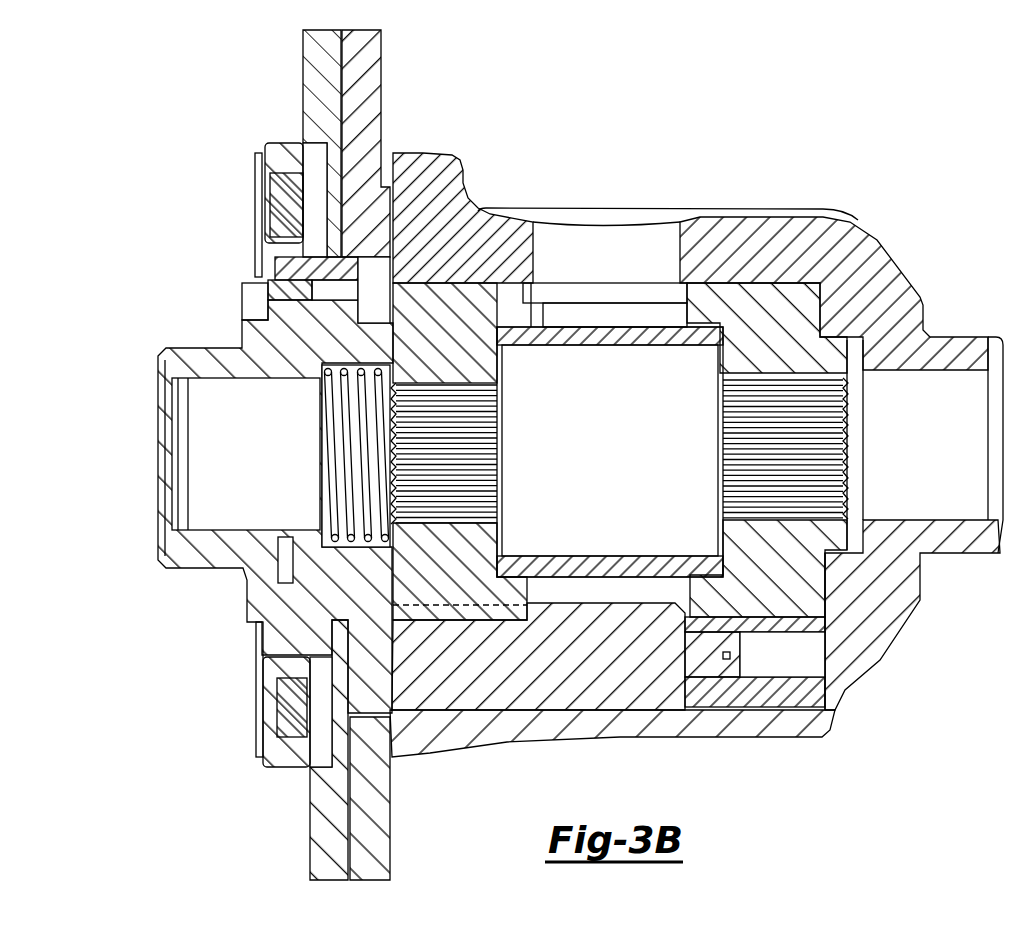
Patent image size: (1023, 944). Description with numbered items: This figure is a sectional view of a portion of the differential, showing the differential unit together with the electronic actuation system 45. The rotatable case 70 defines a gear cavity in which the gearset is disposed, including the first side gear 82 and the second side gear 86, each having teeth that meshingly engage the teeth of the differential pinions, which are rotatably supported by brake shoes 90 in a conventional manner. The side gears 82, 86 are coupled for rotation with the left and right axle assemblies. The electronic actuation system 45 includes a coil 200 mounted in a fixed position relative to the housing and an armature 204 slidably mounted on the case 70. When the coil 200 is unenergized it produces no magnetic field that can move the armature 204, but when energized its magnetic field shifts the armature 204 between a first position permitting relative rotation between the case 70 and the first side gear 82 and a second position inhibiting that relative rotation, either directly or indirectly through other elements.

The electronic actuation system 45 is at (235, 778).
The case 70 is at (655, 206).
The first side gear 82 is at (540, 287).
The second side gear 86 is at (756, 296).
The brake shoes 90 is at (607, 682).
The coil 200 is at (258, 697).
The armature 204 is at (300, 573).